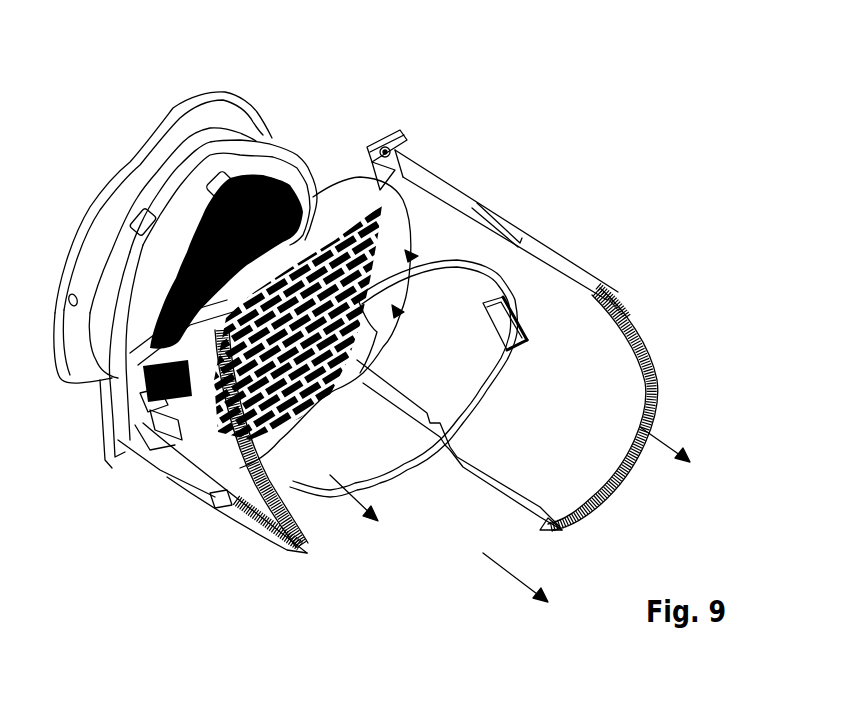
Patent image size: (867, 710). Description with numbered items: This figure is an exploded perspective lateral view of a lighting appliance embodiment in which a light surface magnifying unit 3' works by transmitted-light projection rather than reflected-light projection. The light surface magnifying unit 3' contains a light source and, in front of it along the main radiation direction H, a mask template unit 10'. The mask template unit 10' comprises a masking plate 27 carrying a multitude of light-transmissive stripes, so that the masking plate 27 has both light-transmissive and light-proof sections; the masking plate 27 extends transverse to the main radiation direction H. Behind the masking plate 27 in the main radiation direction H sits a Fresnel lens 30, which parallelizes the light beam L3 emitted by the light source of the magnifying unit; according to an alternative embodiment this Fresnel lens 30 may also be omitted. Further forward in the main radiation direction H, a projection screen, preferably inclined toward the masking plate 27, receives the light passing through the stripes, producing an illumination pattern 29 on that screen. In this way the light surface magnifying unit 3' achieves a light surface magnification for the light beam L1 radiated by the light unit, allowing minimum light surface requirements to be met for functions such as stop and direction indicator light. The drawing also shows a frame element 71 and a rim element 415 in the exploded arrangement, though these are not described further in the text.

The light surface magnifying unit 3' is at (180, 372).
The Fresnel lens 30 is at (290, 158).
The mask template unit 10' is at (303, 276).
The masking plate 27 is at (390, 210).
The illumination pattern 29 is at (410, 237).
The frame 71 is at (400, 480).
The seal rim 415 is at (652, 383).
The light beam L1 is at (677, 443).
The light beam L3 is at (358, 512).
The main radiation direction H is at (510, 582).